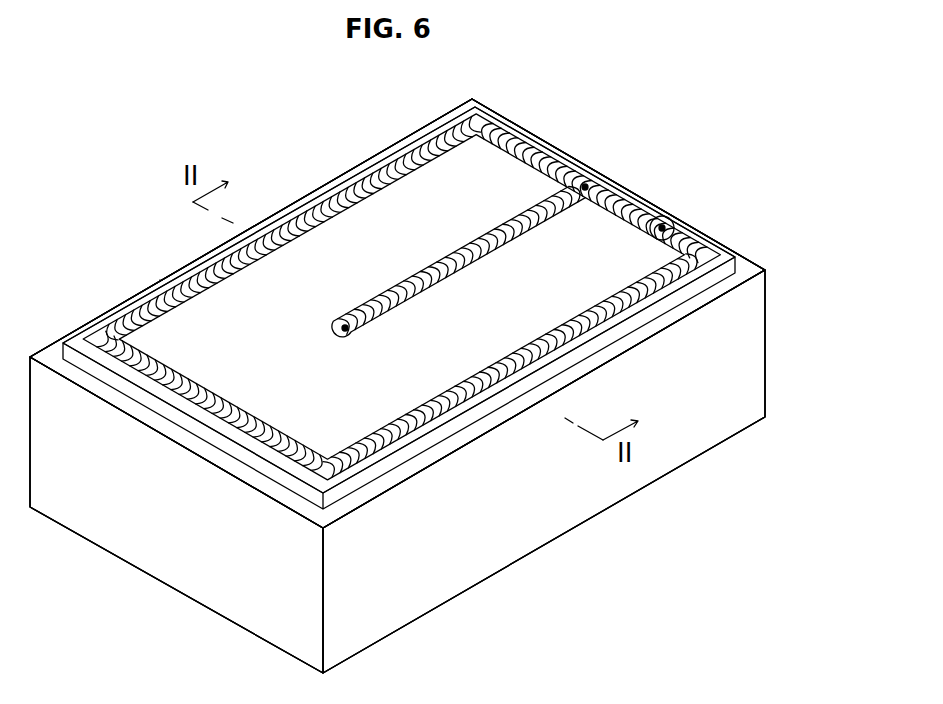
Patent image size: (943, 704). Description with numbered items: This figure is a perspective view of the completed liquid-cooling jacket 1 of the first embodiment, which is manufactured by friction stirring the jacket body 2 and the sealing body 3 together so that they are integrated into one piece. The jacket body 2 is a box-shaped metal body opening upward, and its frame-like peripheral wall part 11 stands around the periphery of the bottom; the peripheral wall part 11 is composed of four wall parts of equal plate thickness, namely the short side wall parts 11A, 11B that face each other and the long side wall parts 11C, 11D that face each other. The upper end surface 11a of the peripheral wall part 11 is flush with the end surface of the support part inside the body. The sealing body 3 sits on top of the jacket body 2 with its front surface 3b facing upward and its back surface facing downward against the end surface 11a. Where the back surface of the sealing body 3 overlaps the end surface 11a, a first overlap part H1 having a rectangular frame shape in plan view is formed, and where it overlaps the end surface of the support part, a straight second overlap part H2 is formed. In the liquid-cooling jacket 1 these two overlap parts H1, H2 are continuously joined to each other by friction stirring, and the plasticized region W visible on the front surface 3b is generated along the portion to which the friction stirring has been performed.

The liquid-cooling jacket 1 is at (218, 108).
The jacket body 2 is at (763, 255).
The sealing body 3 is at (578, 158).
The front surface 3b is at (517, 167).
The peripheral wall part 11 is at (725, 347).
The wall part 11A is at (202, 558).
The wall part 11B is at (628, 182).
The wall part 11C is at (347, 164).
The wall part 11D is at (515, 522).
The end surface 11a is at (53, 350).
The plasticized region W is at (423, 277).
The first overlap part H1 is at (160, 280).
The second overlap part H2 is at (343, 320).